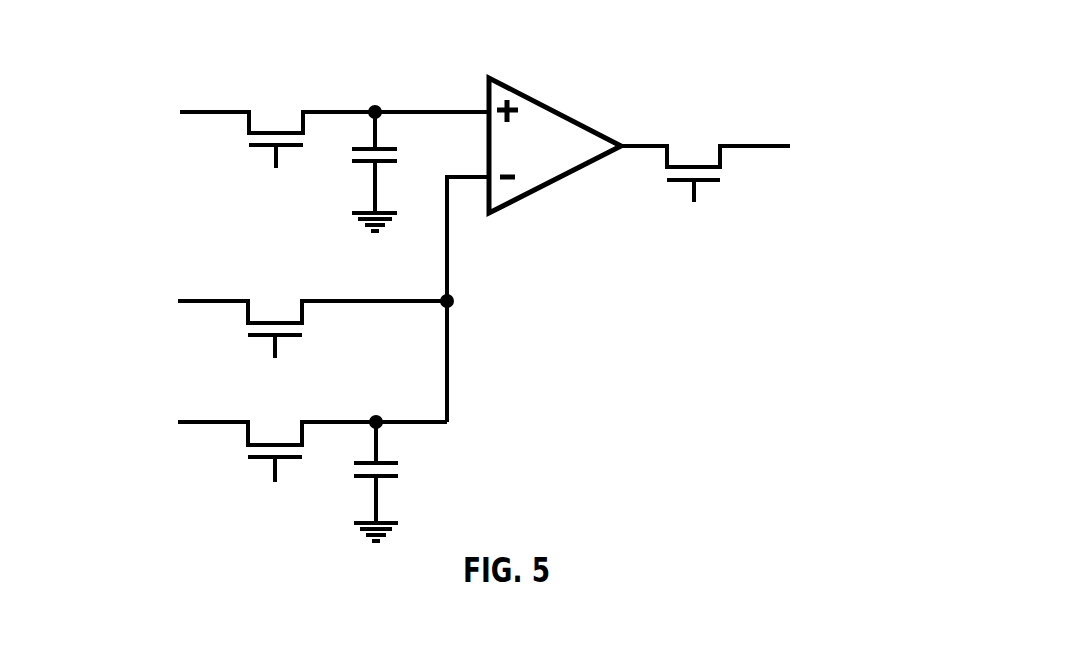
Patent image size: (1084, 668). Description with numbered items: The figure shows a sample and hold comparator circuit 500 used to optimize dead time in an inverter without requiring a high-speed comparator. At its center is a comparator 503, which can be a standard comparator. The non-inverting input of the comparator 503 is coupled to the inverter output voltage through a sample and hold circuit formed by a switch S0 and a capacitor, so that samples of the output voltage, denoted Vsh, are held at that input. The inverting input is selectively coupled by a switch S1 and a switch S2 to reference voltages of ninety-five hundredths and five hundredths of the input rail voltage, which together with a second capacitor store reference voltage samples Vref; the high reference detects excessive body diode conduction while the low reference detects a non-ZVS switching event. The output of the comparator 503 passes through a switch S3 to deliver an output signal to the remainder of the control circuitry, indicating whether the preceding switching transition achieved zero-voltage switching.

The sample and hold comparator circuit 500 is at (732, 49).
The comparator 503 is at (563, 114).
The switch S0 is at (276, 159).
The switch S1 is at (275, 349).
The switch S2 is at (275, 471).
The switch S3 is at (693, 194).